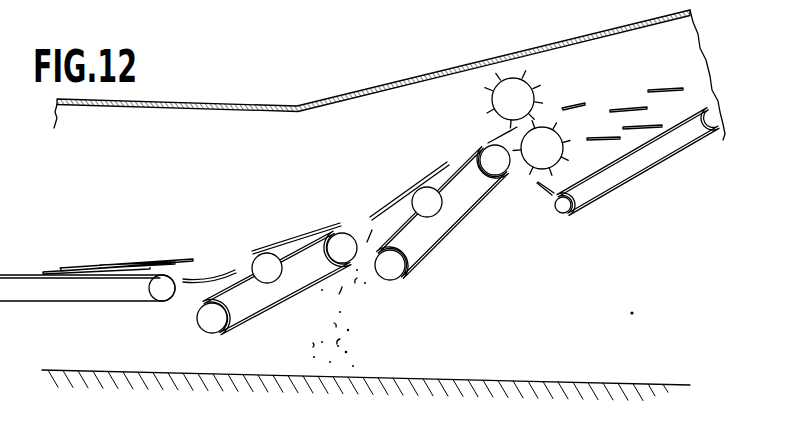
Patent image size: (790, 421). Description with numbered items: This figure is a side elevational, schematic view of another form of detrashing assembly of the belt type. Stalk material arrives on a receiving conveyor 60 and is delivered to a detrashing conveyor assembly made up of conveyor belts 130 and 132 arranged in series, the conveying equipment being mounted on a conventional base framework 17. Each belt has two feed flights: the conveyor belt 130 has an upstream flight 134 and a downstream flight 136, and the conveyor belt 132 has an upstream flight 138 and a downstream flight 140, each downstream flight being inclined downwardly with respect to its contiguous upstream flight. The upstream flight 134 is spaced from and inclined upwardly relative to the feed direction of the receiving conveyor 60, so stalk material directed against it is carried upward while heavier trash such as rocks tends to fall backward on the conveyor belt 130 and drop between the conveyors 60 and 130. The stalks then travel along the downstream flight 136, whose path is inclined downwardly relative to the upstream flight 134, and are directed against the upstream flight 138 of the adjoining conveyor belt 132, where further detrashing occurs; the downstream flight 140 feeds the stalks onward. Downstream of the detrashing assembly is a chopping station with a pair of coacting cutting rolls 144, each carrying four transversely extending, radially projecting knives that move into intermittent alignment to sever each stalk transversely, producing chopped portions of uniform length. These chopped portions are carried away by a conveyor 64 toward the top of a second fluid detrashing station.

The base framework 17 is at (339, 94).
The receiving conveyor 60 is at (31, 270).
The conveyor 64 is at (660, 163).
The conveyor belt 130 is at (273, 303).
The conveyor belt 132 is at (448, 234).
The upstream flight 134 is at (203, 296).
The downstream flight 136 is at (303, 238).
The upstream flight 138 is at (392, 222).
The downstream flight 140 is at (464, 160).
The cutting rolls 144 is at (543, 127).